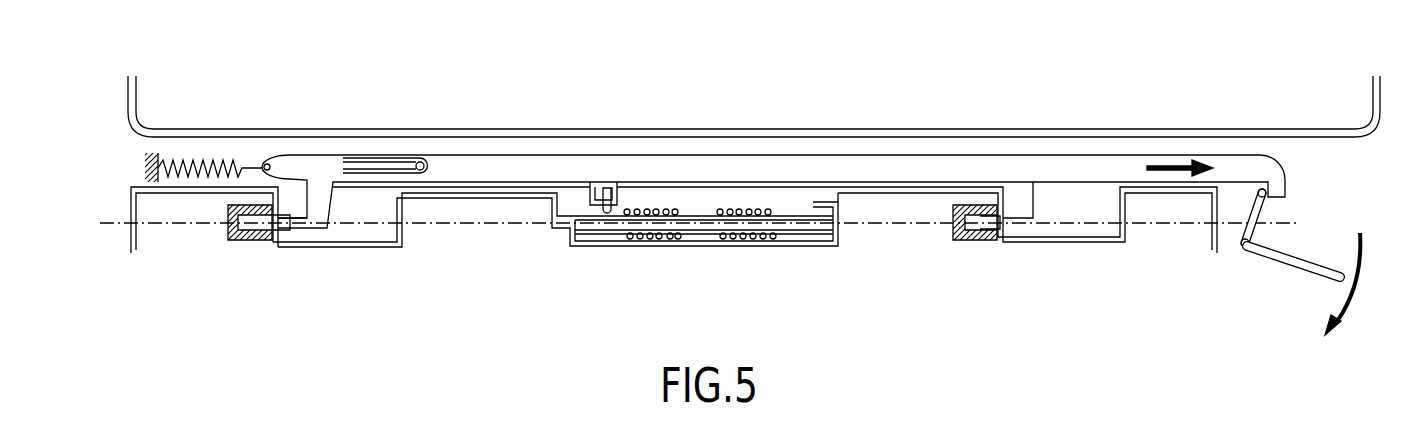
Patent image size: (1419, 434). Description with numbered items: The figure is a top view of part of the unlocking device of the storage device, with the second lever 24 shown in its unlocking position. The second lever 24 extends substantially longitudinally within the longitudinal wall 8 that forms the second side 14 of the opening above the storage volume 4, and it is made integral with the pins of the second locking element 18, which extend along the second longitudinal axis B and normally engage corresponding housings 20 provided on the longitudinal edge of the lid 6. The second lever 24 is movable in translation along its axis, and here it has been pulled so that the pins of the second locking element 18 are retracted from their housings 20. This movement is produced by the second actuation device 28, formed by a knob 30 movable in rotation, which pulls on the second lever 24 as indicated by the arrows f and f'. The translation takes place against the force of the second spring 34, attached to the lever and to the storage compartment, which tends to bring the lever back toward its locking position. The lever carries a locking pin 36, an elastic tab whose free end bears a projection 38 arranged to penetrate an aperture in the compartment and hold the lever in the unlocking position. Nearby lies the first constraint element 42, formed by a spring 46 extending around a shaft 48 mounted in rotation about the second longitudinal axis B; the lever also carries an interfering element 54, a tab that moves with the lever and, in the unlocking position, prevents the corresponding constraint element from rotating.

The storage volume 4 is at (743, 108).
The second side 14 is at (938, 128).
The second lever 24 is at (497, 168).
The second spring 34 is at (193, 170).
The locking pin 36 is at (355, 170).
The projection 38 is at (428, 162).
The lid 6 is at (237, 242).
The housing 20 is at (248, 241).
The second locking element 18 is at (287, 228).
The longitudinal wall 8 is at (375, 246).
The interfering element 54 is at (595, 198).
The first constraint element 42 is at (697, 228).
The shaft 48 is at (795, 195).
The spring 46 is at (773, 233).
The second longitudinal axis B is at (907, 223).
The knob 30 is at (1252, 253).
The second actuation device 28 is at (1293, 265).
The arrow f is at (1180, 124).
The arrow f' is at (1363, 284).